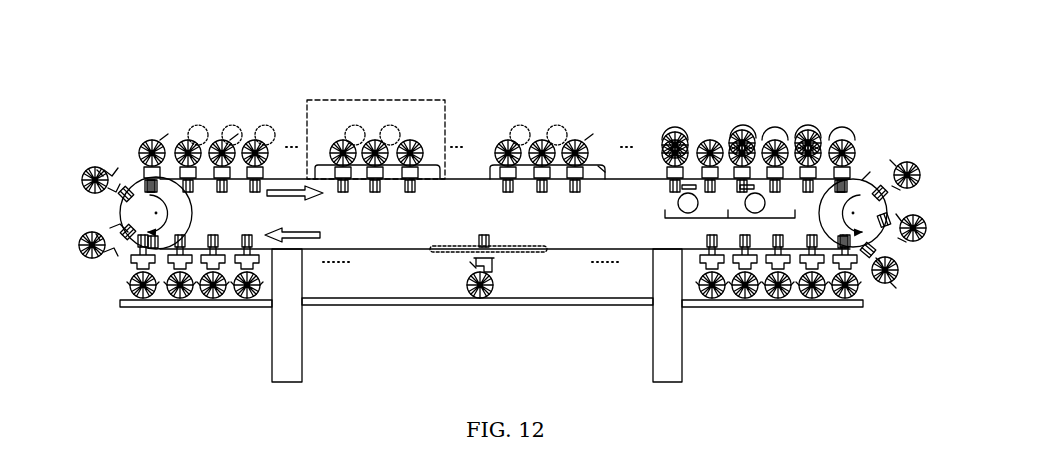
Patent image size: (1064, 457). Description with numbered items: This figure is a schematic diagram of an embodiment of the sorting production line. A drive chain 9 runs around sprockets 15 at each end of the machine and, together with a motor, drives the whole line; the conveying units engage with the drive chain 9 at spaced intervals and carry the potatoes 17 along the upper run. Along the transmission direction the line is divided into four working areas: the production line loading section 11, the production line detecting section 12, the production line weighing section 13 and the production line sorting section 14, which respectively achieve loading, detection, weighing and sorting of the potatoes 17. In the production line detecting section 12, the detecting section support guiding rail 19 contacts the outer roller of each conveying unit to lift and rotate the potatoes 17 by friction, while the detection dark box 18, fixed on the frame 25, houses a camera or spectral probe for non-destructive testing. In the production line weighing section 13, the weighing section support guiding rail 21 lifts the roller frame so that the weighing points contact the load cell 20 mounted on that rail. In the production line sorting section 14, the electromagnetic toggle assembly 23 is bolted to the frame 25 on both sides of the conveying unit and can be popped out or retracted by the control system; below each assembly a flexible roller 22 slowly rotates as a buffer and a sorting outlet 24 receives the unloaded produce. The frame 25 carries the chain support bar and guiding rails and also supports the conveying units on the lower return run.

The drive chain 9 is at (431, 253).
The production line loading section 11 is at (207, 111).
The production line detecting section 12 is at (384, 114).
The production line weighing section 13 is at (547, 120).
The production line sorting section 14 is at (738, 135).
The sprocket 15 is at (868, 170).
The potatoes 17 is at (236, 124).
The detection dark box 18 is at (326, 97).
The detecting section support guiding rail 19 is at (436, 174).
The load cell 20 is at (529, 170).
The weighing section support guiding rail 21 is at (604, 172).
The flexible roller 22 is at (676, 204).
The electromagnetic toggle assembly 23 is at (746, 190).
The sorting outlet 24 is at (667, 223).
The frame 25 is at (294, 322).